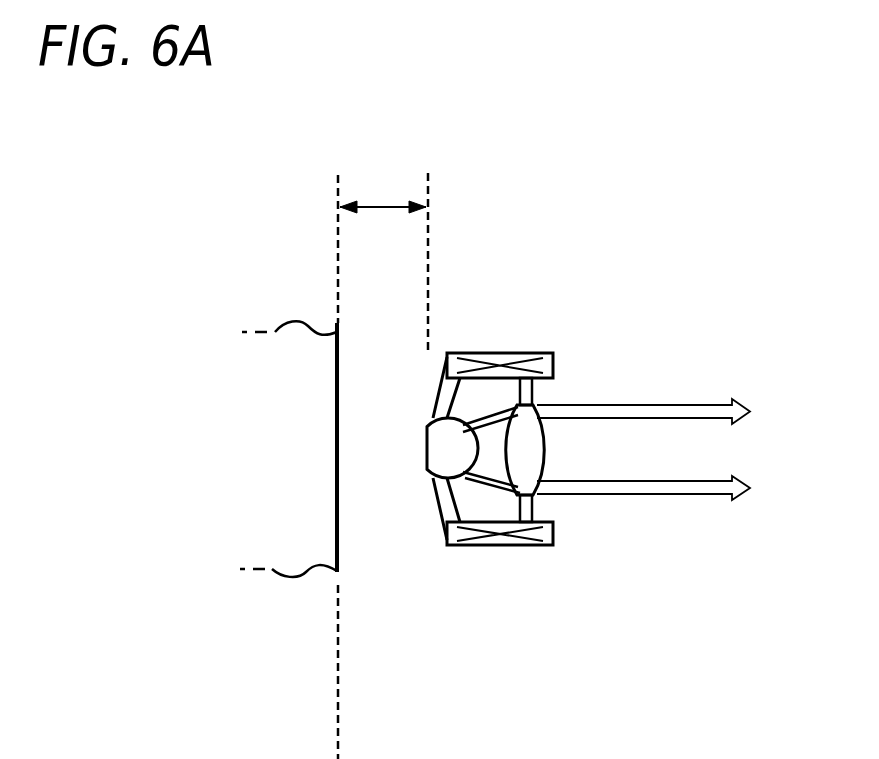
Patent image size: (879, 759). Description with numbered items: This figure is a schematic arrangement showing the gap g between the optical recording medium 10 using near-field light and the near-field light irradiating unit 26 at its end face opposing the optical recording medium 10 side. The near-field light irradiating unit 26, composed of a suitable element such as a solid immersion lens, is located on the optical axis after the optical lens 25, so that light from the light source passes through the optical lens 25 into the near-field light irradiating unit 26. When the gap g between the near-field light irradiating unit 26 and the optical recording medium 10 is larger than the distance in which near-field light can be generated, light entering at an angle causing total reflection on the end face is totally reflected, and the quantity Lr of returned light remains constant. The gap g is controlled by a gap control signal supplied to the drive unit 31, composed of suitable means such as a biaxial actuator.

The optical recording medium 10 is at (316, 553).
The optical lens 25 is at (537, 493).
The near-field light irradiating unit 26 is at (435, 455).
The drive unit 31 is at (490, 353).
The gap g is at (383, 205).
The quantity of returned light Lr is at (757, 385).